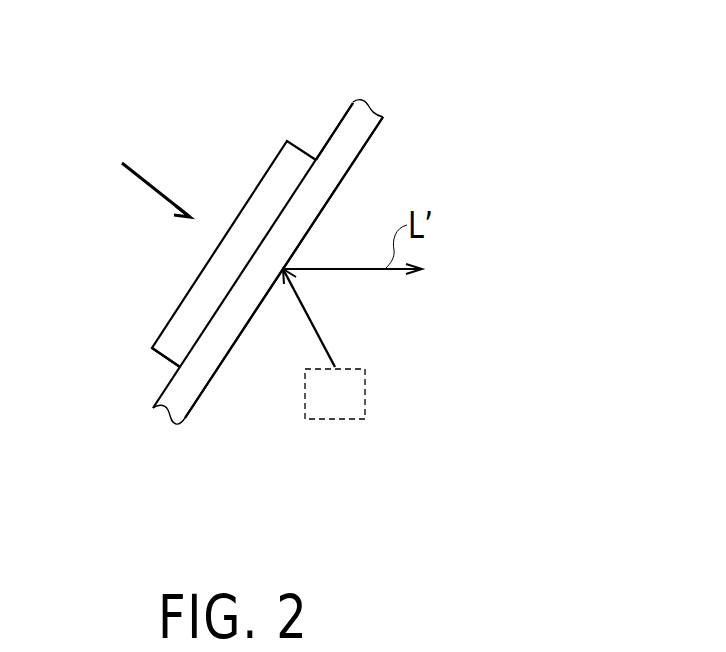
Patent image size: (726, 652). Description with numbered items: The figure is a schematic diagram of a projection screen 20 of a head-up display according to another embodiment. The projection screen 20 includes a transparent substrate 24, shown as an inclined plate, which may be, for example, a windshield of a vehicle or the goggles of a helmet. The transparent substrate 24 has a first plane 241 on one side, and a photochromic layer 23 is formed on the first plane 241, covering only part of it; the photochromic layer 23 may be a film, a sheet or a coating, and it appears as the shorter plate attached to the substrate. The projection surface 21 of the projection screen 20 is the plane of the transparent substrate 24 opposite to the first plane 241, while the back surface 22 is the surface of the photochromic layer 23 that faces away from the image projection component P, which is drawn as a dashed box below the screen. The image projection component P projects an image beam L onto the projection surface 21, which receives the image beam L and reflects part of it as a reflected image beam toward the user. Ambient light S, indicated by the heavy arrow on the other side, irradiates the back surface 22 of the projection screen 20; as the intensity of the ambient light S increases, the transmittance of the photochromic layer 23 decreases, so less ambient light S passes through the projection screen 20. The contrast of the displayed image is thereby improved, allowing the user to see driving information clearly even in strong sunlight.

The projection screen 20 is at (227, 291).
The projection surface 21 is at (222, 362).
The back surface 22 is at (143, 313).
The photochromic layer 23 is at (171, 344).
The transparent substrate 24 is at (188, 388).
The first plane 241 is at (333, 132).
The ambient light S is at (148, 180).
The image beam L is at (319, 333).
The image projection component P is at (332, 402).